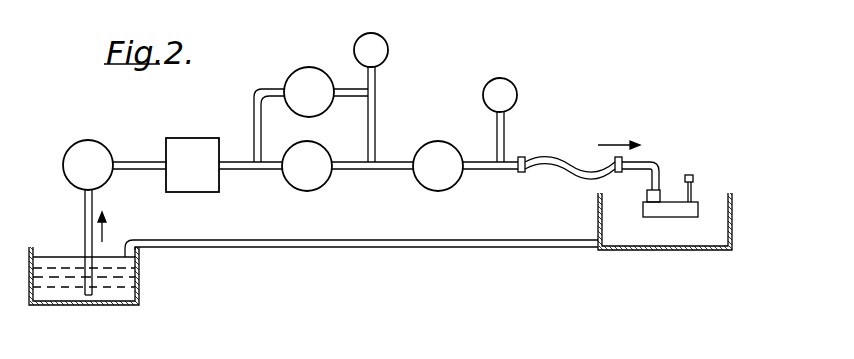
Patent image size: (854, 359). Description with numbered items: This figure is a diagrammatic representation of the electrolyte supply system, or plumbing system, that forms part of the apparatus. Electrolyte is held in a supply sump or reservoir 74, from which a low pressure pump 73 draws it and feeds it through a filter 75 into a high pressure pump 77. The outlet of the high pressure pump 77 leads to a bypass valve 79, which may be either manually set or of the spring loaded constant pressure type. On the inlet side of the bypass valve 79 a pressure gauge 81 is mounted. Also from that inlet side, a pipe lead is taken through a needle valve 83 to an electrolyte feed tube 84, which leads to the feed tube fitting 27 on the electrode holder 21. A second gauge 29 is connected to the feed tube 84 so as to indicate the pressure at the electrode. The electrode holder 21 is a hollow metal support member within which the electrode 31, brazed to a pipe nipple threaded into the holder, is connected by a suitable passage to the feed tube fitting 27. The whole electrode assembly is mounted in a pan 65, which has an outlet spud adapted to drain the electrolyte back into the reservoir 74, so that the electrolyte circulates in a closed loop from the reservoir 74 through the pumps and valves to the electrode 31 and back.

The electrode holder 21 is at (658, 210).
The feed tube fitting 27 is at (662, 188).
The second gauge 29 is at (509, 83).
The electrode 31 is at (697, 184).
The pan 65 is at (733, 233).
The low pressure pump 73 is at (96, 143).
The reservoir 74 is at (139, 290).
The filter 75 is at (188, 144).
The high pressure pump 77 is at (318, 186).
The bypass valve 79 is at (304, 72).
The pressure gauge 81 is at (384, 40).
The needle valve 83 is at (437, 142).
The electrolyte feed tube 84 is at (551, 158).